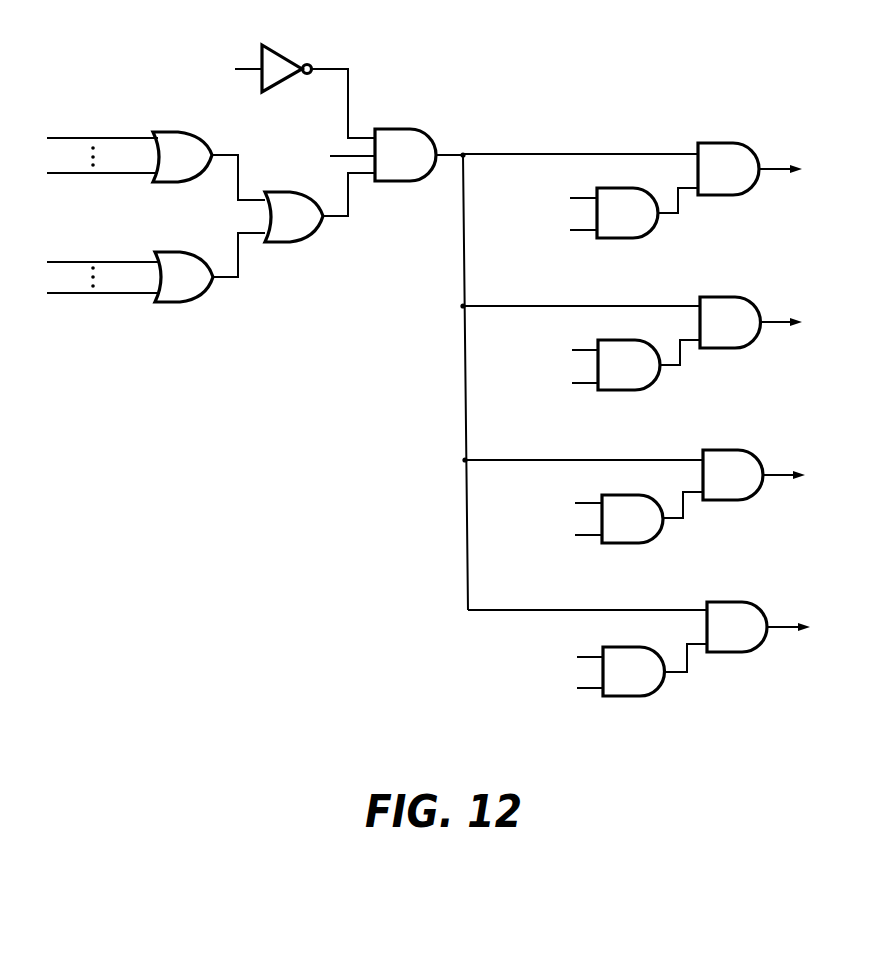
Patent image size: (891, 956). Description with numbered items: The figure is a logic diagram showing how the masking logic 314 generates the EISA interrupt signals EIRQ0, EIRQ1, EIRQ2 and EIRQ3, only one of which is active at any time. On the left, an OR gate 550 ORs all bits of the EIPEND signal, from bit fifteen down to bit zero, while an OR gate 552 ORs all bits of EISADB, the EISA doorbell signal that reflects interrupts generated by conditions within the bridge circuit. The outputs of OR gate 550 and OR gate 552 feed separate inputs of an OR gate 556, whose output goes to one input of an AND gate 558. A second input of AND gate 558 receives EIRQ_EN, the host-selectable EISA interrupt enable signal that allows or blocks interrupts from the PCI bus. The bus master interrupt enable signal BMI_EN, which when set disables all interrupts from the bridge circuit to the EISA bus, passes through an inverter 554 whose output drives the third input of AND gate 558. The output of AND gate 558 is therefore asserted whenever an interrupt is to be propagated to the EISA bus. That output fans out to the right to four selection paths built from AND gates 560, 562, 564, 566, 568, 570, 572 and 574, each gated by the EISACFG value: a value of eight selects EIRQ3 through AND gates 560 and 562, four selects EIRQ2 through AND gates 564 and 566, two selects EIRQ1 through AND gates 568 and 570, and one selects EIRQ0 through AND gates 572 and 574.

The masking logic 314 is at (803, 764).
The OR gate 550 is at (180, 132).
The OR gate 552 is at (183, 303).
The inverter 554 is at (280, 53).
The OR gate 556 is at (295, 243).
The AND gate 558 is at (405, 128).
The AND gate 560 is at (735, 143).
The AND gate 562 is at (628, 240).
The AND gate 564 is at (735, 297).
The AND gate 566 is at (628, 392).
The AND gate 568 is at (738, 450).
The AND gate 570 is at (630, 545).
The AND gate 572 is at (742, 602).
The AND gate 574 is at (632, 698).